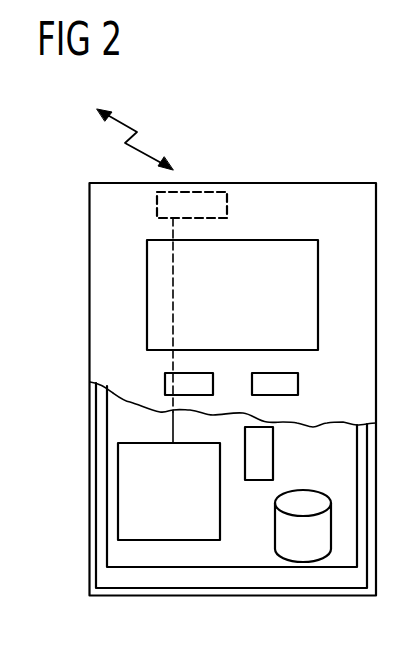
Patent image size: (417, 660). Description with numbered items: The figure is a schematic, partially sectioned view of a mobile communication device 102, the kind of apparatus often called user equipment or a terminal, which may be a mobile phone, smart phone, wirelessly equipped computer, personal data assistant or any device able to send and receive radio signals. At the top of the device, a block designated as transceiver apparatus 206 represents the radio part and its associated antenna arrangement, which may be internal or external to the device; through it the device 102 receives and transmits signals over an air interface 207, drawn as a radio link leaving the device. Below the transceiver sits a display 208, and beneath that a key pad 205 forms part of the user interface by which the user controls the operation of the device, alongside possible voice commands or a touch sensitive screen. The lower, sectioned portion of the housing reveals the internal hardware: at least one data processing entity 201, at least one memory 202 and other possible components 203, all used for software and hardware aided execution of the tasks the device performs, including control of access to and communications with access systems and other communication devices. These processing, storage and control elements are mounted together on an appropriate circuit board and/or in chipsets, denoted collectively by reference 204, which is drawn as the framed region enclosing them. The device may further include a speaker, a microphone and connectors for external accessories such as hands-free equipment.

The communication device 102 is at (280, 183).
The data processing entity 201 is at (118, 490).
The memory 202 is at (302, 560).
The other possible components 203 is at (273, 445).
The circuit board and/or chipsets 204 is at (117, 556).
The key pad 205 is at (165, 385).
The transceiver apparatus 206 is at (227, 205).
The air interface 207 is at (128, 127).
The display 208 is at (147, 296).